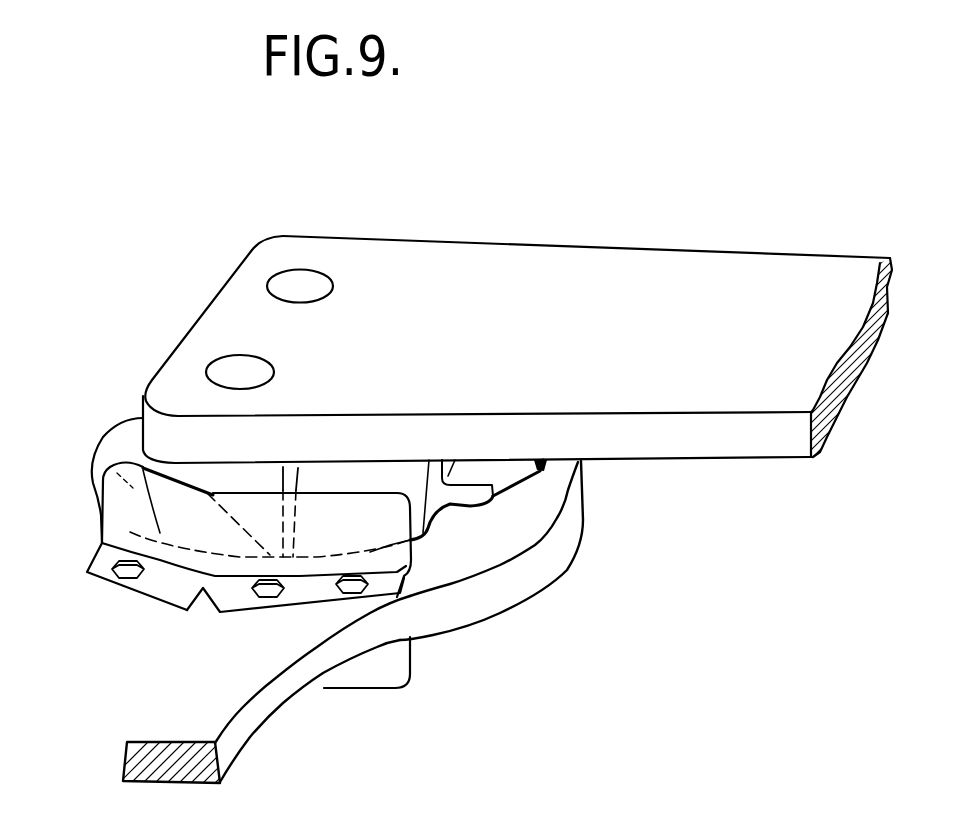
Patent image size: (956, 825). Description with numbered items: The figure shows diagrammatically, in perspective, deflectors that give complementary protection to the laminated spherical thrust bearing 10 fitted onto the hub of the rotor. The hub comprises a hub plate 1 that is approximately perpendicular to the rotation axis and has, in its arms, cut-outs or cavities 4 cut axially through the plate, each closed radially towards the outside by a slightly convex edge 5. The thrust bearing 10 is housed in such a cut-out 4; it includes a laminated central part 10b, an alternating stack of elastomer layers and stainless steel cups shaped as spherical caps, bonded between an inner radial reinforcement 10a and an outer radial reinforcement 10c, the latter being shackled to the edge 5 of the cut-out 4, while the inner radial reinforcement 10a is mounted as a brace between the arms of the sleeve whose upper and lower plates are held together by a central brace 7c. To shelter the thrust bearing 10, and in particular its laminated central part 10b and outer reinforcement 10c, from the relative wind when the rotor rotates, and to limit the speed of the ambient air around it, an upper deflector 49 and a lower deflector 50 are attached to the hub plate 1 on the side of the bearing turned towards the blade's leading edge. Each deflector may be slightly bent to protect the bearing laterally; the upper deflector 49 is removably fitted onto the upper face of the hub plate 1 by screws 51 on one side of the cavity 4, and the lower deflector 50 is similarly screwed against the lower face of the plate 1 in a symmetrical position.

The central brace 7c is at (478, 282).
The cut-out 4 is at (128, 452).
The upper deflector 49 is at (130, 502).
The inner radial reinforcement 10a is at (252, 481).
The laminated spherical thrust bearing 10 is at (441, 541).
The laminated central part 10b is at (408, 484).
The outer radial reinforcement 10c is at (490, 473).
The edge 5 is at (427, 505).
The hub plate 1 is at (237, 737).
The lower deflector 50 is at (387, 668).
The screws 51 is at (247, 590).